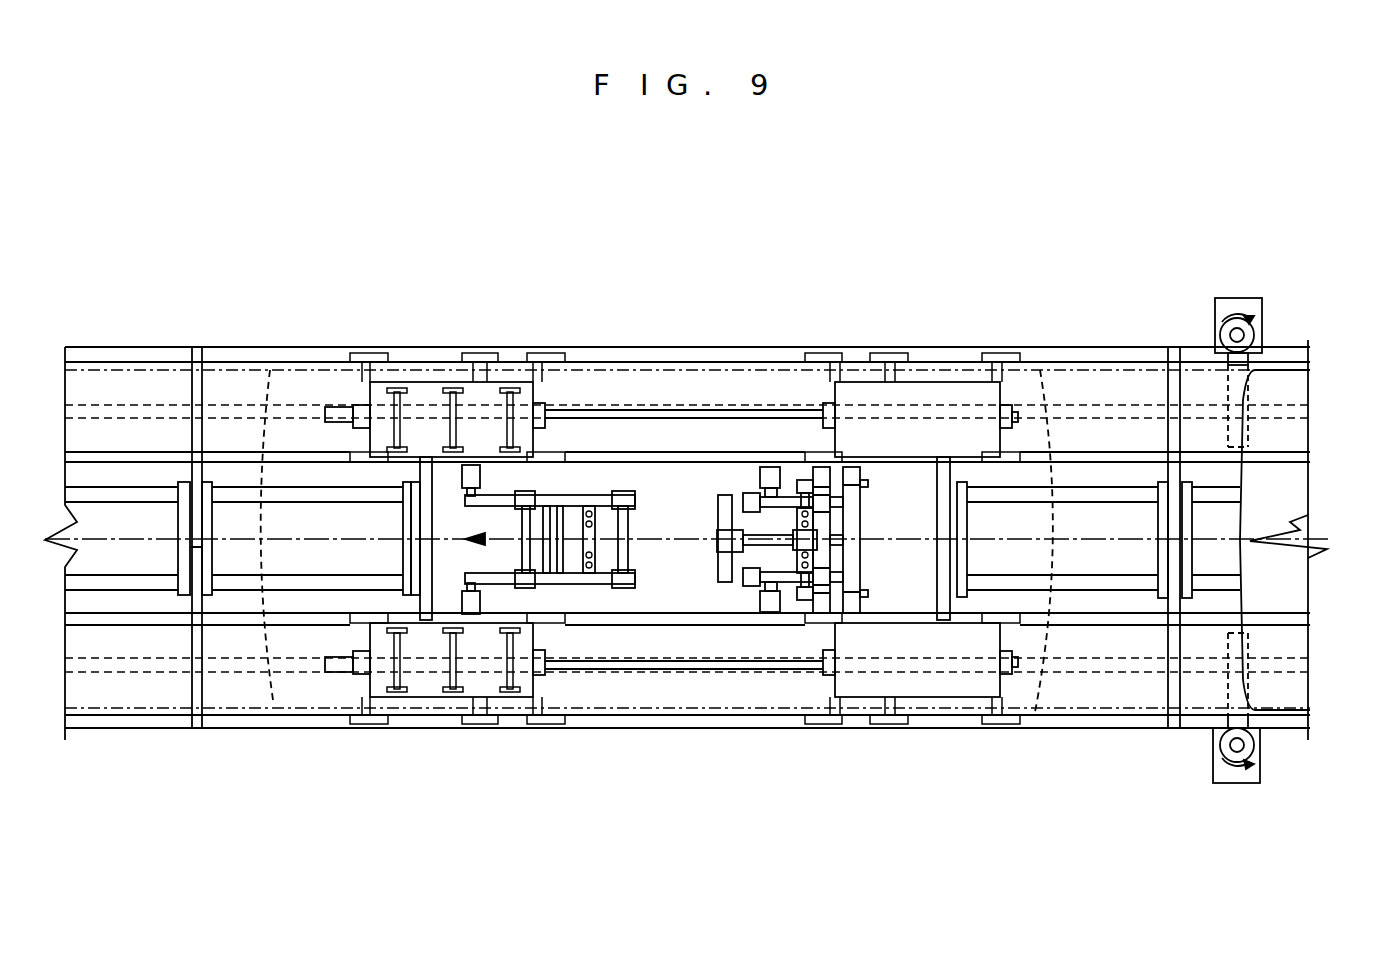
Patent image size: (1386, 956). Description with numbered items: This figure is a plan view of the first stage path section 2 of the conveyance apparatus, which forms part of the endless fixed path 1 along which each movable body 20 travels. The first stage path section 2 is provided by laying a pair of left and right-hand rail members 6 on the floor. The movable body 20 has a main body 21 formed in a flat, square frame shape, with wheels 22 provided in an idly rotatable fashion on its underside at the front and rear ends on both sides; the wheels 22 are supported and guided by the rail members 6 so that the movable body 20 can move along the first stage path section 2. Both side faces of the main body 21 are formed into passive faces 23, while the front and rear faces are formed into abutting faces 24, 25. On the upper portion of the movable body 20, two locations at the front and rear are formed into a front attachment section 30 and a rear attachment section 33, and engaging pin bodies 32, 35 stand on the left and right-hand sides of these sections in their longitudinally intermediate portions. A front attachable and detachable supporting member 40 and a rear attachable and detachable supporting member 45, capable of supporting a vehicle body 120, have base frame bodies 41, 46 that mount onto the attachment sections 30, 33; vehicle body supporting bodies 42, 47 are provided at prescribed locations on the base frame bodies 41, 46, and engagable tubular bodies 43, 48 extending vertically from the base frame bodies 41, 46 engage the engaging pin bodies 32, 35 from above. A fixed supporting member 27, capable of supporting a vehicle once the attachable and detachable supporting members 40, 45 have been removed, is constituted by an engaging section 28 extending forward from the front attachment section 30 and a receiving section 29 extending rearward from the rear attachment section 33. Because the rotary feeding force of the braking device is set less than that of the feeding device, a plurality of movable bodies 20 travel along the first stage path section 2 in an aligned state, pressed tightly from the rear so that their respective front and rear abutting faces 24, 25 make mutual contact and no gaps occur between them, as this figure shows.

The fixed path 1 is at (1272, 537).
The first stage path section 2 is at (1263, 553).
The rail member 6 is at (1087, 405).
The movable body 20 is at (133, 338).
The main body 21 is at (825, 270).
The wheel 22 is at (408, 727).
The passive face 23 is at (315, 348).
The abutting face 24 is at (188, 694).
The abutting face 25 is at (215, 363).
The fixed supporting member 27 is at (510, 365).
The engaging section 28 is at (452, 385).
The receiving section 29 is at (957, 392).
The front attachment section 30 is at (577, 600).
The engaging pin body 32 is at (592, 508).
The rear attachment section 33 is at (726, 584).
The engaging pin body 35 is at (815, 524).
The front attachable and detachable supporting member 40 is at (595, 588).
The base frame body 41 is at (467, 566).
The vehicle body supporting body 42 is at (627, 588).
The engagable tubular body 43 is at (589, 539).
The rear attachable and detachable supporting member 45 is at (725, 497).
The base frame body 46 is at (723, 520).
The vehicle body supporting body 47 is at (790, 468).
The engagable tubular body 48 is at (835, 540).
The vehicle body 120 is at (1293, 467).